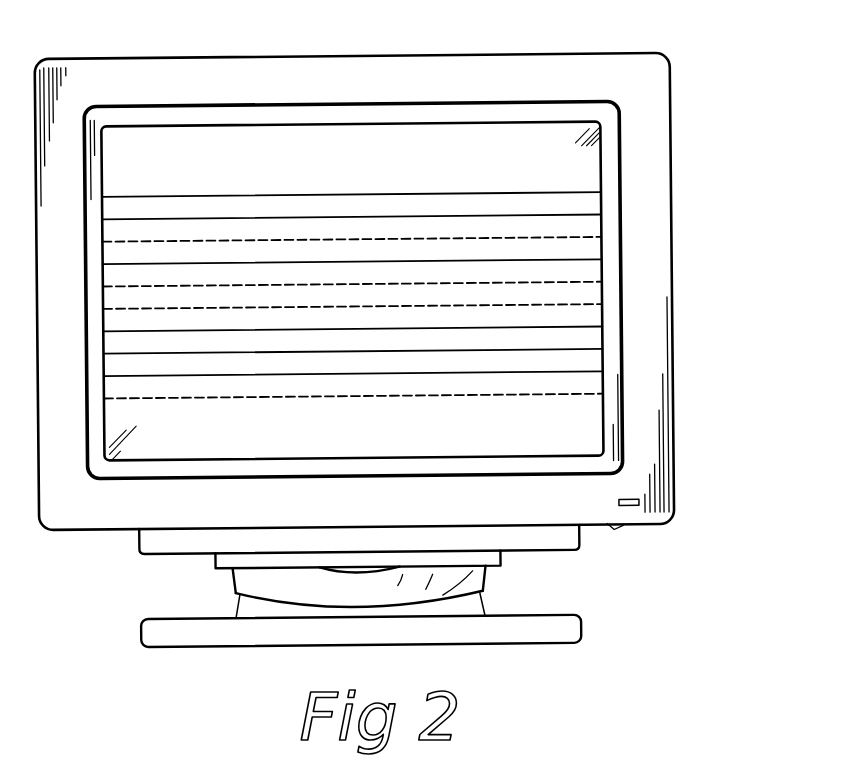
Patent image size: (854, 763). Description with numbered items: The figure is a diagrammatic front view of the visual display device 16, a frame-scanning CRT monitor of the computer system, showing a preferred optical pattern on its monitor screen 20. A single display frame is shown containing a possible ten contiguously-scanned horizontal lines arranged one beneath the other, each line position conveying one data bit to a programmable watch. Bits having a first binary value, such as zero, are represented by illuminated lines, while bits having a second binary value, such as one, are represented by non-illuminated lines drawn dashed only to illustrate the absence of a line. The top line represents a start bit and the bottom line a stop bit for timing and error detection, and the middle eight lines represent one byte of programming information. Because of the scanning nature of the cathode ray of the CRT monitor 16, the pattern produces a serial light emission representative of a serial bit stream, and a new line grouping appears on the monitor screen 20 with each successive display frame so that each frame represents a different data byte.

The visual display device 16 is at (590, 516).
The monitor screen 20 is at (542, 138).